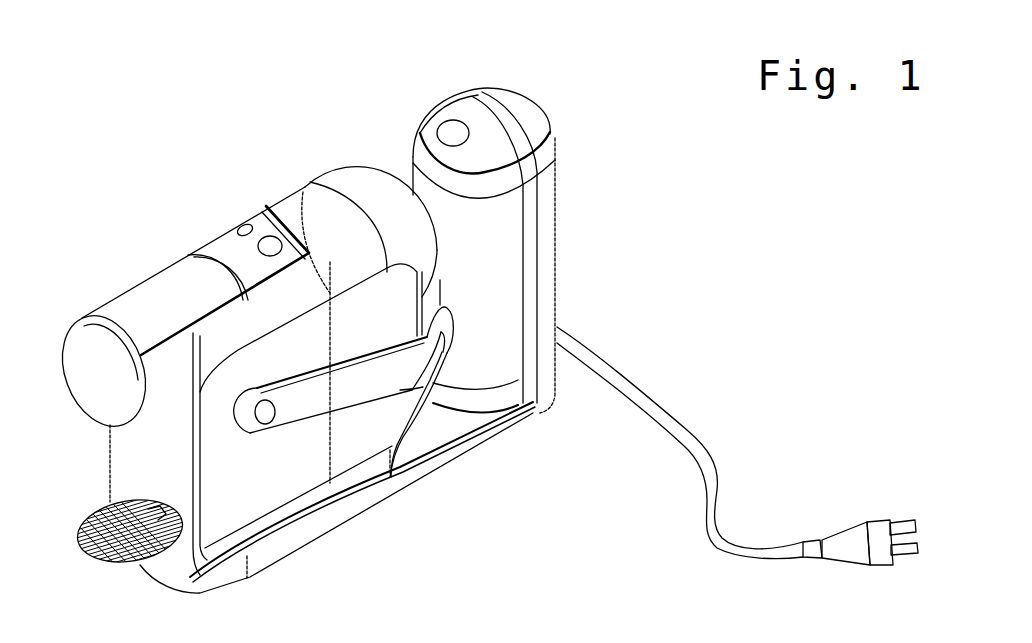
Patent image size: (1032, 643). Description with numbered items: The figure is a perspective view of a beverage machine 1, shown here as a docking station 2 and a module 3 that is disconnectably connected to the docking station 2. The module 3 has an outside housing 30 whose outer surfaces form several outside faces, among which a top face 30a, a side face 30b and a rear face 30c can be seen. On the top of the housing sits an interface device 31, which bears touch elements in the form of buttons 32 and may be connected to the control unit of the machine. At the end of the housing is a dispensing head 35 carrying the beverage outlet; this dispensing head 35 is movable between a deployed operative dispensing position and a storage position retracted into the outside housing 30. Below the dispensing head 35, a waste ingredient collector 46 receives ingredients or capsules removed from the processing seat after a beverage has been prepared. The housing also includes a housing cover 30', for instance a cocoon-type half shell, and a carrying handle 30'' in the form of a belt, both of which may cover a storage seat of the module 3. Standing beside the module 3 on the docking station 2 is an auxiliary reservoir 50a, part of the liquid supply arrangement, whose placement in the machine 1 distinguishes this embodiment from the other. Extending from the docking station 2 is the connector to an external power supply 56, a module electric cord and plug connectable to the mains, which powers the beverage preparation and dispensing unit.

The beverage machine 1 is at (108, 58).
The docking station 2 is at (531, 430).
The module 3 is at (153, 222).
The outside housing 30 is at (371, 173).
The top face 30a is at (212, 252).
The side face 30b is at (298, 342).
The rear face 30c is at (422, 240).
The housing cover 30' is at (459, 253).
The carrying handle 30'' is at (378, 409).
The interface device 31 is at (273, 235).
The button 32 is at (268, 240).
The dispensing head 35 is at (86, 383).
The waste ingredient collector 46 is at (155, 483).
The auxiliary reservoir 50a is at (540, 288).
The connector to an external power supply 56 is at (757, 547).